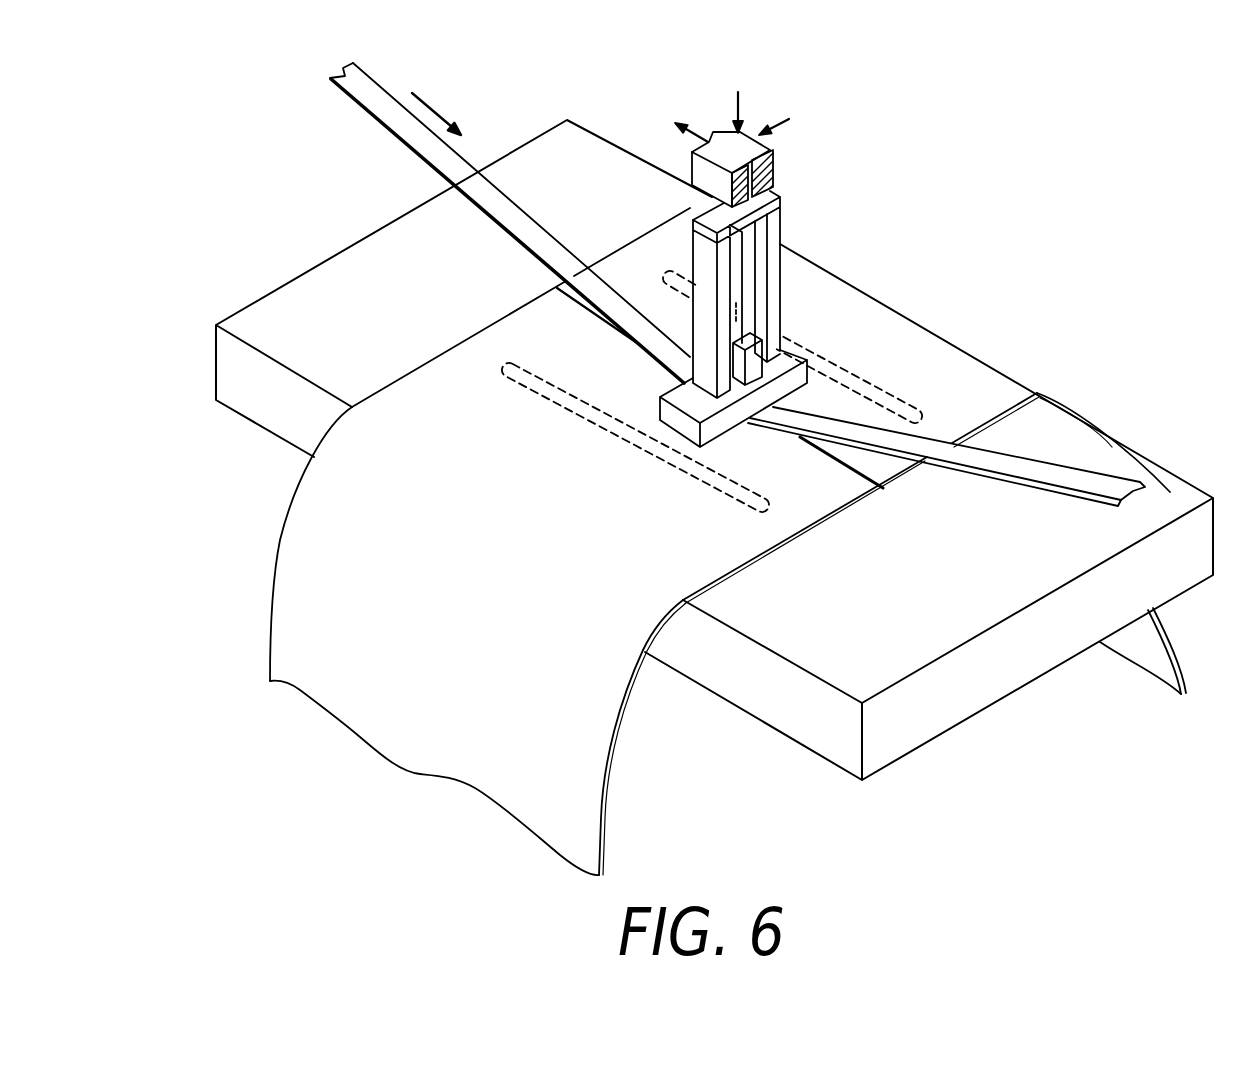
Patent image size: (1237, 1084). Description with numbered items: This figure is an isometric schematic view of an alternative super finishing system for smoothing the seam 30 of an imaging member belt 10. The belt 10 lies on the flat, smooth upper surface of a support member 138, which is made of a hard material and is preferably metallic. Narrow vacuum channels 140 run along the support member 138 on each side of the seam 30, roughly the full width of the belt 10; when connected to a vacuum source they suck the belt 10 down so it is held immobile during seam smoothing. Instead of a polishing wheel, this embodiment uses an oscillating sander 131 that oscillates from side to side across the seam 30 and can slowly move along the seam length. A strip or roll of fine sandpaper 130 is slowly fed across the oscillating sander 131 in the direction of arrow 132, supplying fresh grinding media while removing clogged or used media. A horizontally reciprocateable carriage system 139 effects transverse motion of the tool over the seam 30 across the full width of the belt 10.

The imaging member belt 10 is at (695, 469).
The seam 30 is at (823, 450).
The sandpaper 130 is at (515, 213).
The oscillating sander 131 is at (786, 355).
The arrow 132 is at (433, 111).
The support member 138 is at (900, 568).
The horizontally reciprocateable carriage system 139 is at (772, 163).
The vacuum channel 140 is at (589, 399).